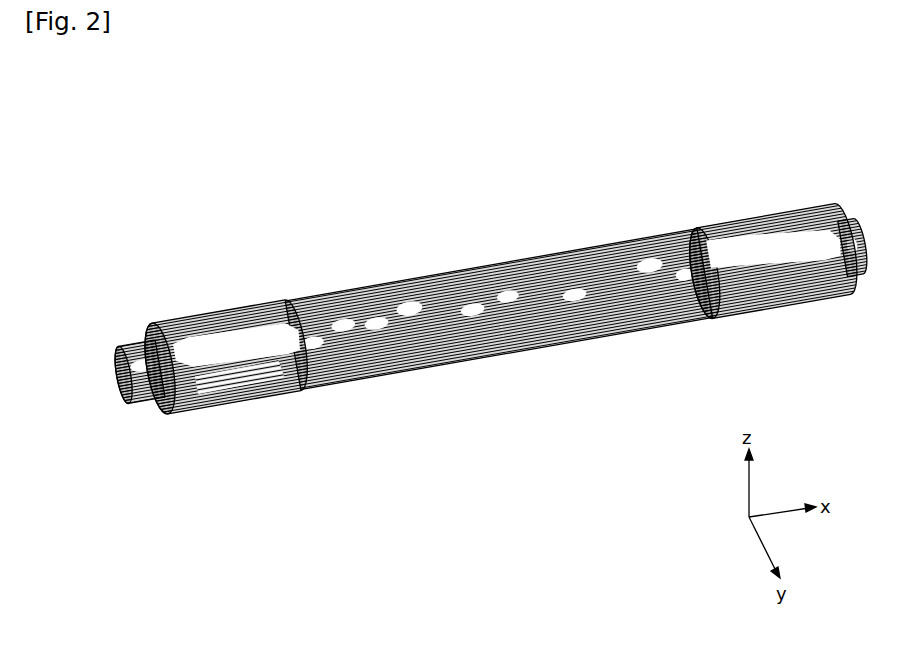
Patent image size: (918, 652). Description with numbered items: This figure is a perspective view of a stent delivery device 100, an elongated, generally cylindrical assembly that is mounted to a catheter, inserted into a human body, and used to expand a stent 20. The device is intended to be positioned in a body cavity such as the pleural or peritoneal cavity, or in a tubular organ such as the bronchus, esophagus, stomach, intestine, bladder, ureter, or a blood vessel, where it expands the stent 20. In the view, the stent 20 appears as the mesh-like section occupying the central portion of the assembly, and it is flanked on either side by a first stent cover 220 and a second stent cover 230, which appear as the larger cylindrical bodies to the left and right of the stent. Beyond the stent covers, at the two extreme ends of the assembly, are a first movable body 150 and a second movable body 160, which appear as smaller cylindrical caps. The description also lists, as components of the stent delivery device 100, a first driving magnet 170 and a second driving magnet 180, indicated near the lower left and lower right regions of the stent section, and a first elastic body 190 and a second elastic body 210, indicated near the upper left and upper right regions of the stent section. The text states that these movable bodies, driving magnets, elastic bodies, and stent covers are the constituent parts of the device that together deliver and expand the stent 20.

The stent delivery device 100 is at (812, 101).
The first movable body 150 is at (143, 341).
The second movable body 160 is at (853, 225).
The first stent cover 220 is at (229, 312).
The second stent cover 230 is at (762, 220).
The stent 20 is at (420, 278).
The first elastic body 190 is at (325, 295).
The second elastic body 210 is at (625, 243).
The first driving magnet 170 is at (373, 377).
The second driving magnet 180 is at (637, 329).